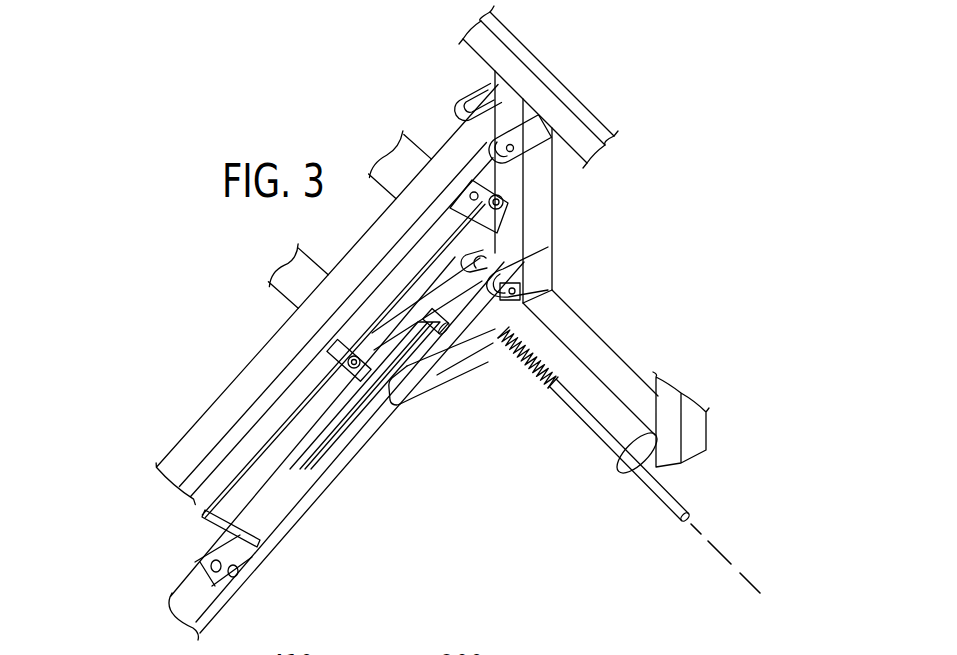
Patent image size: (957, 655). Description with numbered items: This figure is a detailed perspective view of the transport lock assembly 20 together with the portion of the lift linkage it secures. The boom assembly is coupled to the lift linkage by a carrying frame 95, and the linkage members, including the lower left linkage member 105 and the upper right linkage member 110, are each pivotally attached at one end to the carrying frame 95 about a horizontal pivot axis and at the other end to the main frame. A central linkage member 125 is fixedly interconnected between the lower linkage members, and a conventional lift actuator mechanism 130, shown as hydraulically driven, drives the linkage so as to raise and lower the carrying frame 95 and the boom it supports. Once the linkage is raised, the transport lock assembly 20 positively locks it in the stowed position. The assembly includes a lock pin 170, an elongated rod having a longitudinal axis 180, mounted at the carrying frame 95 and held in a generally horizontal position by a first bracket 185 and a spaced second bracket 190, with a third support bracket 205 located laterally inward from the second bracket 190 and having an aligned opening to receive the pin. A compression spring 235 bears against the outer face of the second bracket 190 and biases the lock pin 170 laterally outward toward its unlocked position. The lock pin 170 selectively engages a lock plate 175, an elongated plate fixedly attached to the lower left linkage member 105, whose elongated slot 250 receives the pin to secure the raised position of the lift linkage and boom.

The transport lock assembly 20 is at (519, 446).
The carrying frame 95 is at (570, 309).
The lower left linkage member 105 is at (343, 462).
The upper right linkage member 110 is at (200, 424).
The central linkage member 125 is at (286, 288).
The lift actuator mechanism 130 is at (255, 481).
The lock pin 170 is at (678, 497).
The lock plate 175 is at (474, 346).
The longitudinal axis 180 is at (745, 578).
The first lock pin support bracket 185 is at (624, 468).
The second lock pin support bracket 190 is at (492, 335).
The third support bracket 205 is at (557, 217).
The spring 235 is at (540, 352).
The elongated slot 250 is at (413, 410).